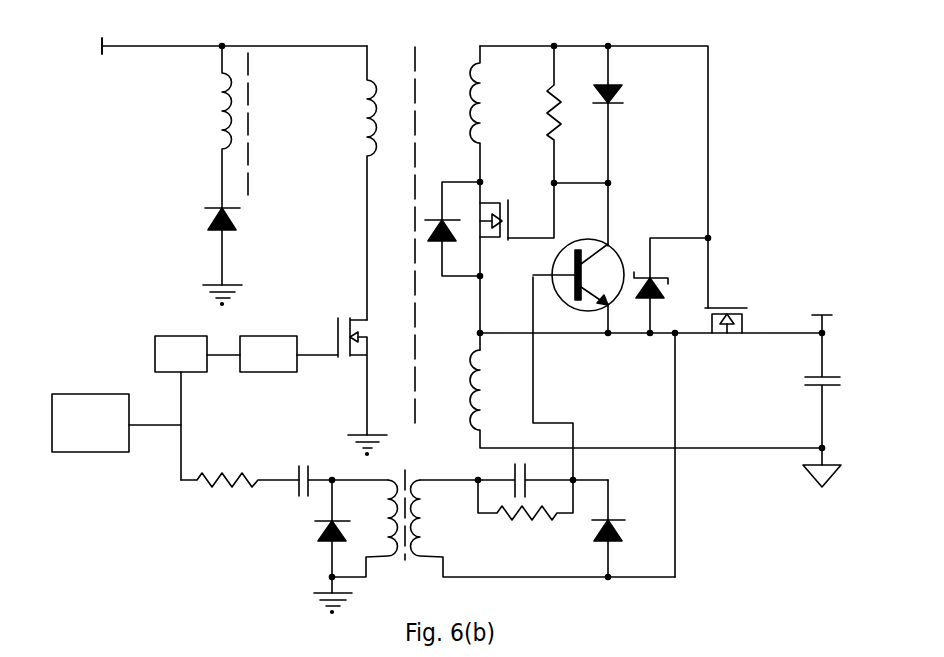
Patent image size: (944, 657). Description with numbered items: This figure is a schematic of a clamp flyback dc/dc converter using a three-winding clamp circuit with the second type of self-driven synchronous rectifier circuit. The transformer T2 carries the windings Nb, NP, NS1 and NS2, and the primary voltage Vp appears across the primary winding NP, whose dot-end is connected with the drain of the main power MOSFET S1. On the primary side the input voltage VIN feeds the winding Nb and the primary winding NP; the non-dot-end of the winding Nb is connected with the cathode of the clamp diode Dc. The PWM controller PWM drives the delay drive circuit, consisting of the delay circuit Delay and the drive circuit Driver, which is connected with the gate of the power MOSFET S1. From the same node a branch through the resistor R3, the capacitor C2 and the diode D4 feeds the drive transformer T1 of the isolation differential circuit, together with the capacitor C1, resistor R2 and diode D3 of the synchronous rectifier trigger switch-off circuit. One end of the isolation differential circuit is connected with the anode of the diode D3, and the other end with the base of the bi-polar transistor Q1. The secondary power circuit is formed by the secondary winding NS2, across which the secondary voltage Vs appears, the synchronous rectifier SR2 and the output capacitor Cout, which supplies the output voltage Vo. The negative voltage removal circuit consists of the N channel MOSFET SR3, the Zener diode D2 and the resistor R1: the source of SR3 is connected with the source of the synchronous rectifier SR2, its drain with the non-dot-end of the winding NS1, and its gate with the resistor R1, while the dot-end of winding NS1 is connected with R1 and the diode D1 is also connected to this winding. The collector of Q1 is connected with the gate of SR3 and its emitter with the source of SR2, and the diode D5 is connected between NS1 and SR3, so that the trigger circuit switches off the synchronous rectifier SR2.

The input voltage VIN is at (87, 46).
The winding Nb is at (217, 127).
The diode Dc is at (201, 256).
The primary winding NP is at (377, 183).
The primary voltage Vp is at (330, 122).
The transformer T2 is at (429, 238).
The main power MOSFET S1 is at (342, 386).
The delay circuit Delay is at (197, 408).
The drive circuit Driver is at (268, 354).
The PWM controller PWM is at (116, 423).
The resistor R3 is at (240, 463).
The capacitor C2 is at (342, 468).
The diode D4 is at (314, 546).
The drive transformer T1 is at (503, 513).
The capacitor C1 is at (514, 478).
The resistor R2 is at (525, 411).
The diode D3 is at (624, 530).
The winding NS1 is at (500, 198).
The resistor R1 is at (559, 142).
The diode D1 is at (626, 146).
The diode D5 is at (452, 229).
The N channel MOSFET SR3 is at (511, 220).
The bi-polar transistor Q1 is at (564, 286).
The Zener diode D2 is at (672, 285).
The rectifier SR2 is at (726, 336).
The output voltage Vo is at (822, 316).
The output capacitor Cout is at (797, 410).
The secondary winding NS2 is at (621, 397).
The secondary voltage Vs is at (498, 401).